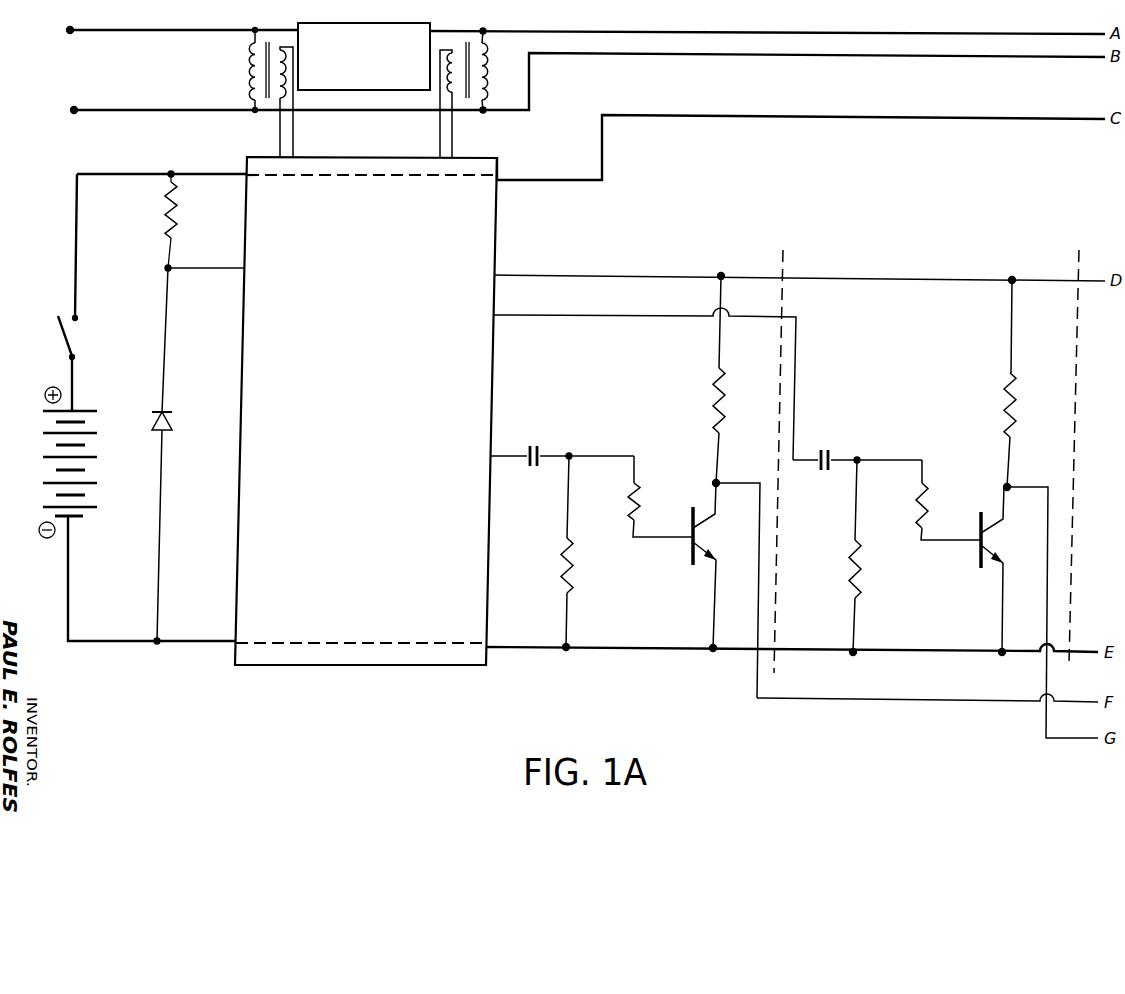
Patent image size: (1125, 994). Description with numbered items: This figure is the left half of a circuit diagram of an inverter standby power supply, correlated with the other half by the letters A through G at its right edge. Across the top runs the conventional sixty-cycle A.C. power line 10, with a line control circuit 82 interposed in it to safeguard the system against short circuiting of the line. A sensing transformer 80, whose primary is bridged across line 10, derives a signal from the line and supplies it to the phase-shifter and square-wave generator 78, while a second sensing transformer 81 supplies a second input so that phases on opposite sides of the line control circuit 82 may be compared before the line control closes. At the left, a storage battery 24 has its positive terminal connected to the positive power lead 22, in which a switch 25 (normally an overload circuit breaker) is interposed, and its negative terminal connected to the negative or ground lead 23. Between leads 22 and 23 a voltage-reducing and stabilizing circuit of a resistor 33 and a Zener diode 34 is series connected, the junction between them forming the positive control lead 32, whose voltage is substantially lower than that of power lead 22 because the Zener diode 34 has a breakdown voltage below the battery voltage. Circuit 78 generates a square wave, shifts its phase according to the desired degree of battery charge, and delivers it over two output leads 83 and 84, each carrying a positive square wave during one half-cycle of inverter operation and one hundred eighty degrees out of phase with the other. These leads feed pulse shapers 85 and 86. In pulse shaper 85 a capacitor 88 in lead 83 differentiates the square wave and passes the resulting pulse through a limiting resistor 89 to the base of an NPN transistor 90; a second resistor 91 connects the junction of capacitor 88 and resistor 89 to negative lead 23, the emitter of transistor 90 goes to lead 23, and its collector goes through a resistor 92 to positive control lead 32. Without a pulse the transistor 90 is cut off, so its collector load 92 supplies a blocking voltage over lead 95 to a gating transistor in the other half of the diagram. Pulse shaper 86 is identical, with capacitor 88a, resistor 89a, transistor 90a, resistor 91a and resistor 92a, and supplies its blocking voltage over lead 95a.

The A.C. power line 10 is at (134, 31).
The positive power lead 22 is at (788, 117).
The negative lead 23 is at (190, 644).
The storage battery 24 is at (27, 478).
The switch 25 is at (70, 330).
The positive control lead 32 is at (204, 270).
The resistor 33 is at (179, 212).
The Zener diode 34 is at (174, 420).
The phase-shifter and square-wave generator 78 is at (500, 238).
The sensing transformer 80 is at (248, 72).
The second sensing transformer 81 is at (488, 68).
The line control circuit 82 is at (360, 92).
The output lead 83 is at (503, 454).
The second output lead 84 is at (569, 318).
The pulse shaper 85 is at (638, 371).
The second pulse shaper 86 is at (910, 377).
The capacitor 88 is at (543, 454).
The limiting resistor 89 is at (641, 484).
The NPN transistor 90 is at (700, 564).
The second resistor 91 is at (575, 561).
The resistor 92 is at (727, 378).
The capacitor 88a is at (838, 457).
The limiting resistor 89a is at (930, 492).
The NPN transistor 90a is at (987, 567).
The second resistor 91a is at (859, 565).
The resistor 92a is at (1017, 388).
The lead 95 is at (830, 703).
The lead 95a is at (1070, 744).